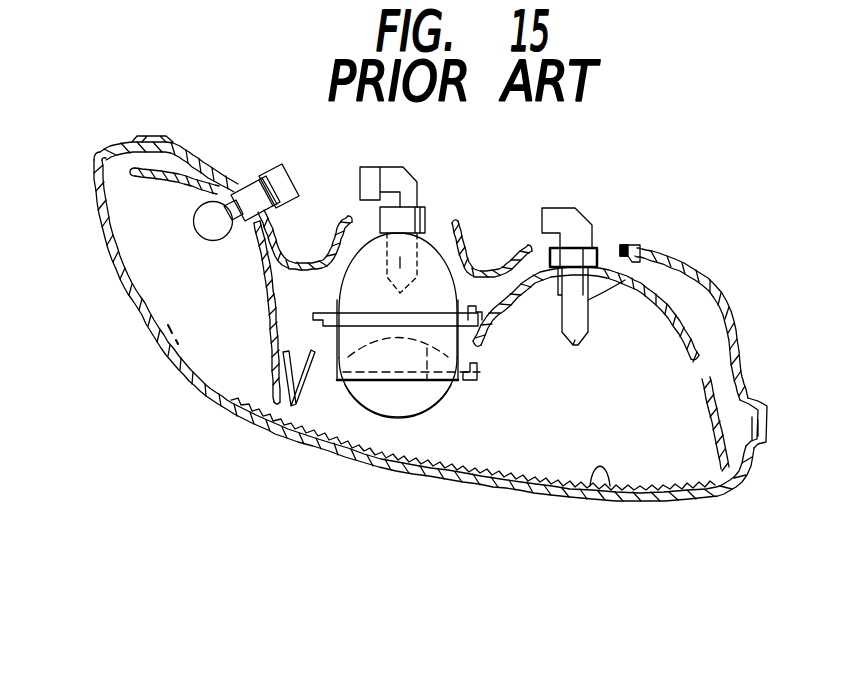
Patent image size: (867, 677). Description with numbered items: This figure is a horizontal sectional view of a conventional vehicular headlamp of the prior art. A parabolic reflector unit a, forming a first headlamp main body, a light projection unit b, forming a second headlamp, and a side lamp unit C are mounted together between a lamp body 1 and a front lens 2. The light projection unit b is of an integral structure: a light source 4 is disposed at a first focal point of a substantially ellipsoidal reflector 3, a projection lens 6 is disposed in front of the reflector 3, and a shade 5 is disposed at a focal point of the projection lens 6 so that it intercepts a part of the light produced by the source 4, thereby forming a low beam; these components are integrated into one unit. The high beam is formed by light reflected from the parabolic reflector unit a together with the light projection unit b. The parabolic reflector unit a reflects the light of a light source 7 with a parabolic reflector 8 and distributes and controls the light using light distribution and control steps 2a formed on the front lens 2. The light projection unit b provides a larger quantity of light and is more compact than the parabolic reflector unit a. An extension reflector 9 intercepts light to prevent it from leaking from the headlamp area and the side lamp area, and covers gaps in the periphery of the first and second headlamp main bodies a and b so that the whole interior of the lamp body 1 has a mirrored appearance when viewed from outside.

The lamp body 1 is at (727, 292).
The front lens 2 is at (639, 500).
The light distribution and control steps 2a is at (587, 488).
The substantially ellipsoidal reflector 3 is at (437, 258).
The light source 4 is at (382, 262).
The shade 5 is at (429, 384).
The projection lens 6 is at (360, 392).
The light source 7 is at (635, 245).
The parabolic reflector 8 is at (677, 322).
The extension reflector 9 is at (713, 441).
The parabolic reflector unit a is at (577, 360).
The light projection unit b is at (377, 423).
The side lamp unit C is at (213, 247).